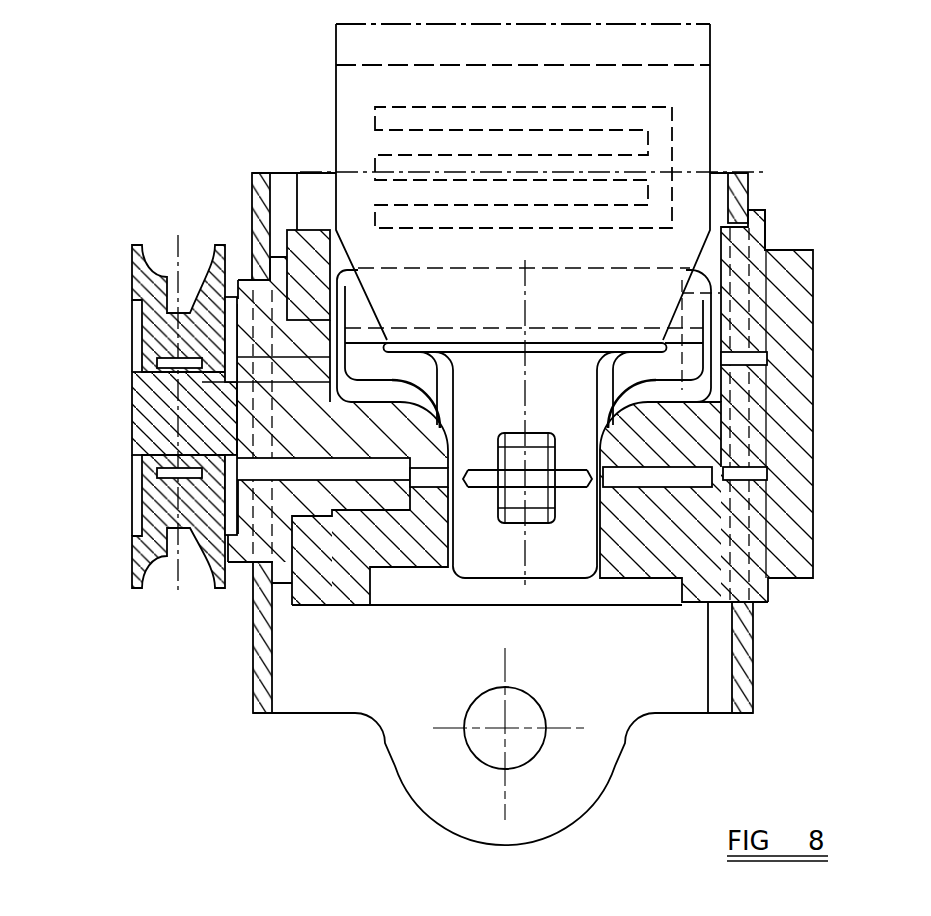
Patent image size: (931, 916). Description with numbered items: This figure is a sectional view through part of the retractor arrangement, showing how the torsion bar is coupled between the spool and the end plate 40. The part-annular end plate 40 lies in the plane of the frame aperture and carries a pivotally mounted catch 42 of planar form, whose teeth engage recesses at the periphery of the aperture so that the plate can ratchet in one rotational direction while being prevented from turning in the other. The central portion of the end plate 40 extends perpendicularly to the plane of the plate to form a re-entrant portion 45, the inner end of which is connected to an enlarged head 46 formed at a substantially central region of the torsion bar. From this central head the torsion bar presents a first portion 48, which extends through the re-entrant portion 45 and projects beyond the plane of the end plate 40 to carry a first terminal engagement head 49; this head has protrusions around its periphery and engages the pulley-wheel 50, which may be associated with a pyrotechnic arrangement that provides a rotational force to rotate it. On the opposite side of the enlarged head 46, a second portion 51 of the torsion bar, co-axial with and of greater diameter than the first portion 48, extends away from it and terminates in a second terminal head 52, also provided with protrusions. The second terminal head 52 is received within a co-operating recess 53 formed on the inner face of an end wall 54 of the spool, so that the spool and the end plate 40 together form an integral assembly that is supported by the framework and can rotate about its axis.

The part-annular end plate 40 is at (258, 302).
The catch 42 is at (272, 423).
The re-entrant portion 45 is at (332, 500).
The enlarged head 46 is at (360, 520).
The first portion 48 is at (228, 460).
The first terminal engagement head 49 is at (155, 435).
The pulley-wheel 50 is at (136, 268).
The second portion 51 is at (680, 423).
The second terminal head 52 is at (762, 395).
The co-operating recess 53 is at (763, 346).
The end wall 54 is at (777, 278).